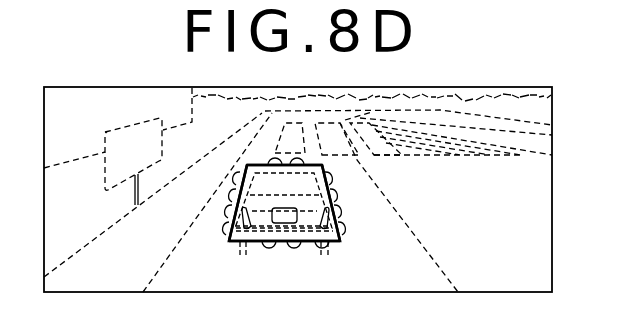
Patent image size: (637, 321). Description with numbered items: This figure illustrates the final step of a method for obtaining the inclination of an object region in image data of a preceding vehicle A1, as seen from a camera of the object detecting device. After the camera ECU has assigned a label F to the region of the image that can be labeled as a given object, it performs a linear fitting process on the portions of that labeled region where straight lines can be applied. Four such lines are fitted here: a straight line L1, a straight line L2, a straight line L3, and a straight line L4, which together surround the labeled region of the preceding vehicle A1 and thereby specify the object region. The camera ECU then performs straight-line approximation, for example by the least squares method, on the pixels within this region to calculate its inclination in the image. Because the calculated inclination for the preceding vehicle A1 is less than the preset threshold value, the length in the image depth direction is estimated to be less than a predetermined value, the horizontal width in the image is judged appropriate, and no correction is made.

The straight line L1 is at (237, 244).
The straight line L2 is at (232, 224).
The straight line L3 is at (245, 166).
The straight line L4 is at (345, 234).
The label F is at (344, 198).
The preceding vehicle A1 is at (258, 255).